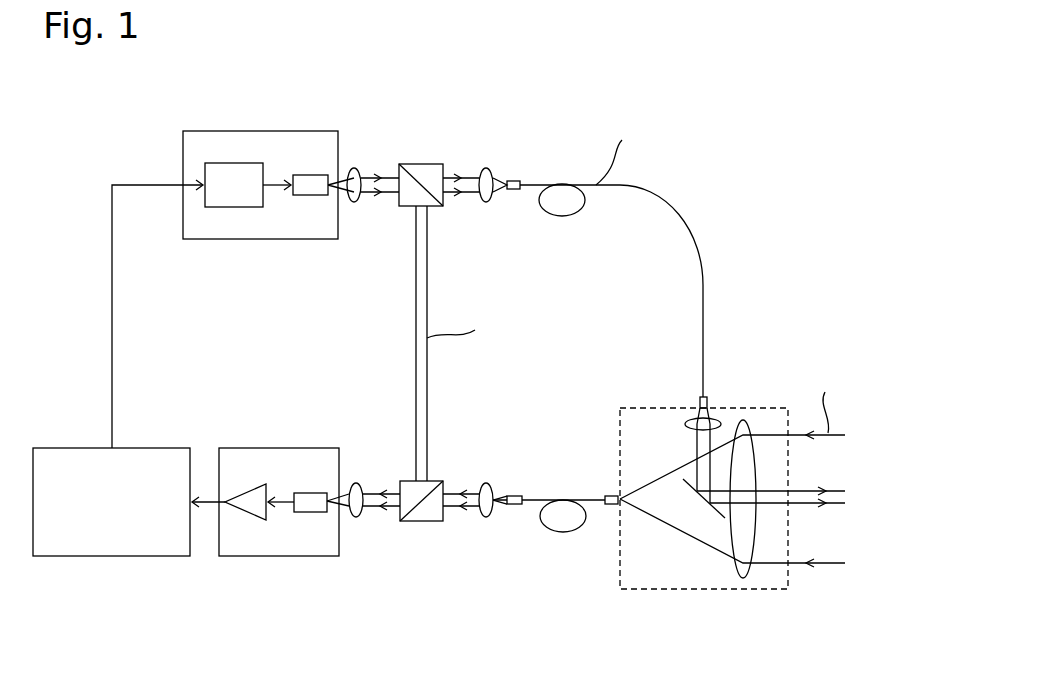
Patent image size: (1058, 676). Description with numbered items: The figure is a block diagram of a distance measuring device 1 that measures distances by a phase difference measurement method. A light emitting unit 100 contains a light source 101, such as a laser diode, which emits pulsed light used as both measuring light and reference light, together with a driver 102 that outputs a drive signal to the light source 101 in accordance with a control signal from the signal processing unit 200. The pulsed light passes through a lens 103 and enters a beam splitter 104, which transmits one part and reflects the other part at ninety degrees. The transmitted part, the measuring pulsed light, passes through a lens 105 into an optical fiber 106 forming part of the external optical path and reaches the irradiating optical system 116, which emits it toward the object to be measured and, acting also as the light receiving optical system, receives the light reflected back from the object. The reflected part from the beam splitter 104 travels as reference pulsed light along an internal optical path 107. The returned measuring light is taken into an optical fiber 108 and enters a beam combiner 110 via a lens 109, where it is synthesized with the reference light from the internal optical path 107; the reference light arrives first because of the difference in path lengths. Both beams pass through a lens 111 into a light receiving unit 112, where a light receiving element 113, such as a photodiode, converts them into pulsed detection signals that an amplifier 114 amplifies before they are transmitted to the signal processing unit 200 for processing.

The distance measuring device 1 is at (710, 185).
The light emitting unit 100 is at (313, 131).
The light source 101 is at (312, 195).
The driver 102 is at (240, 207).
The lens 103 is at (355, 168).
The beam splitter 104 is at (413, 164).
The lens 105 is at (486, 168).
The optical fiber 106 is at (668, 208).
The internal optical path 107 is at (441, 283).
The optical fiber 108 is at (538, 497).
The lens 109 is at (485, 520).
The beam combiner 110 is at (420, 521).
The lens 111 is at (358, 520).
The light receiving unit 112 is at (310, 448).
The light receiving element 113 is at (315, 512).
The amplifier 114 is at (250, 512).
The irradiating optical system 116 is at (660, 408).
The signal processing unit 200 is at (150, 448).